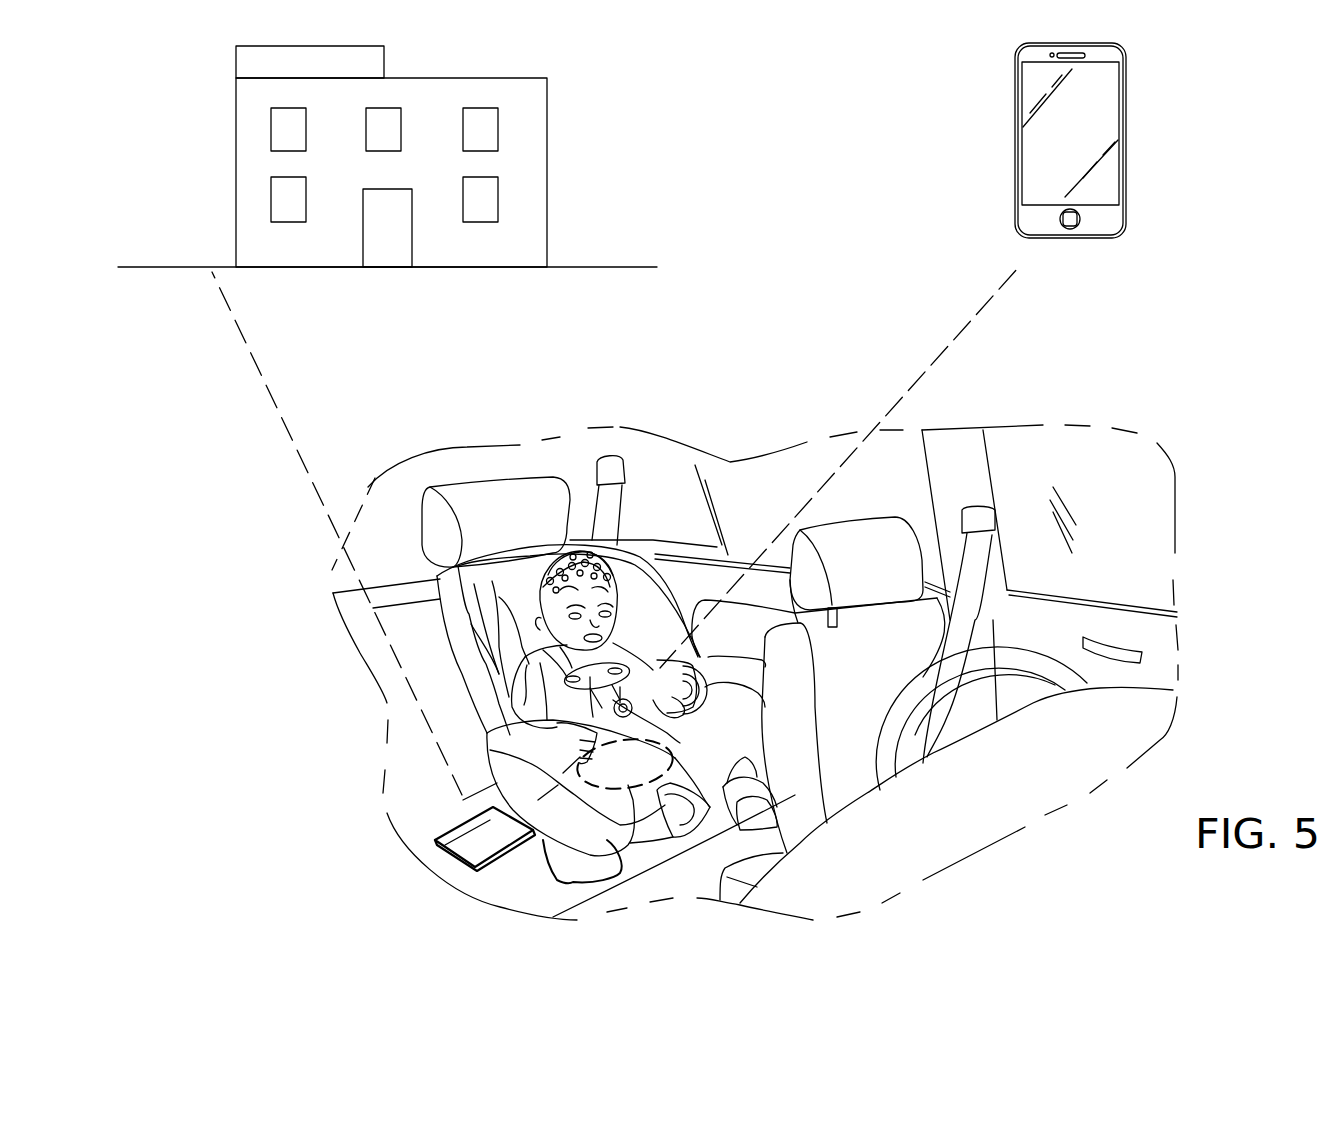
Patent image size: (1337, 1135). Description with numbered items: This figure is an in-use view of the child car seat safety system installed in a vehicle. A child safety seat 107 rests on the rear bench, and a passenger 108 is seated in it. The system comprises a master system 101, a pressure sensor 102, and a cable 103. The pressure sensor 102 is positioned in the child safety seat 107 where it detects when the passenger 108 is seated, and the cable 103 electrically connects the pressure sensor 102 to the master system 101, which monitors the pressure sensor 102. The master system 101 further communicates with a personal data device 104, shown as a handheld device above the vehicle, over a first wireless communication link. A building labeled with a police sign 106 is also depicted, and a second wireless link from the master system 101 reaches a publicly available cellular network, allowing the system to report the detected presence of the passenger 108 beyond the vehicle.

The master system 101 is at (487, 848).
The pressure sensor 102 is at (650, 768).
The cable 103 is at (533, 808).
The personal data device 104 is at (1093, 120).
The police station 106 is at (522, 137).
The child safety seat 107 is at (485, 497).
The passenger 108 is at (640, 653).